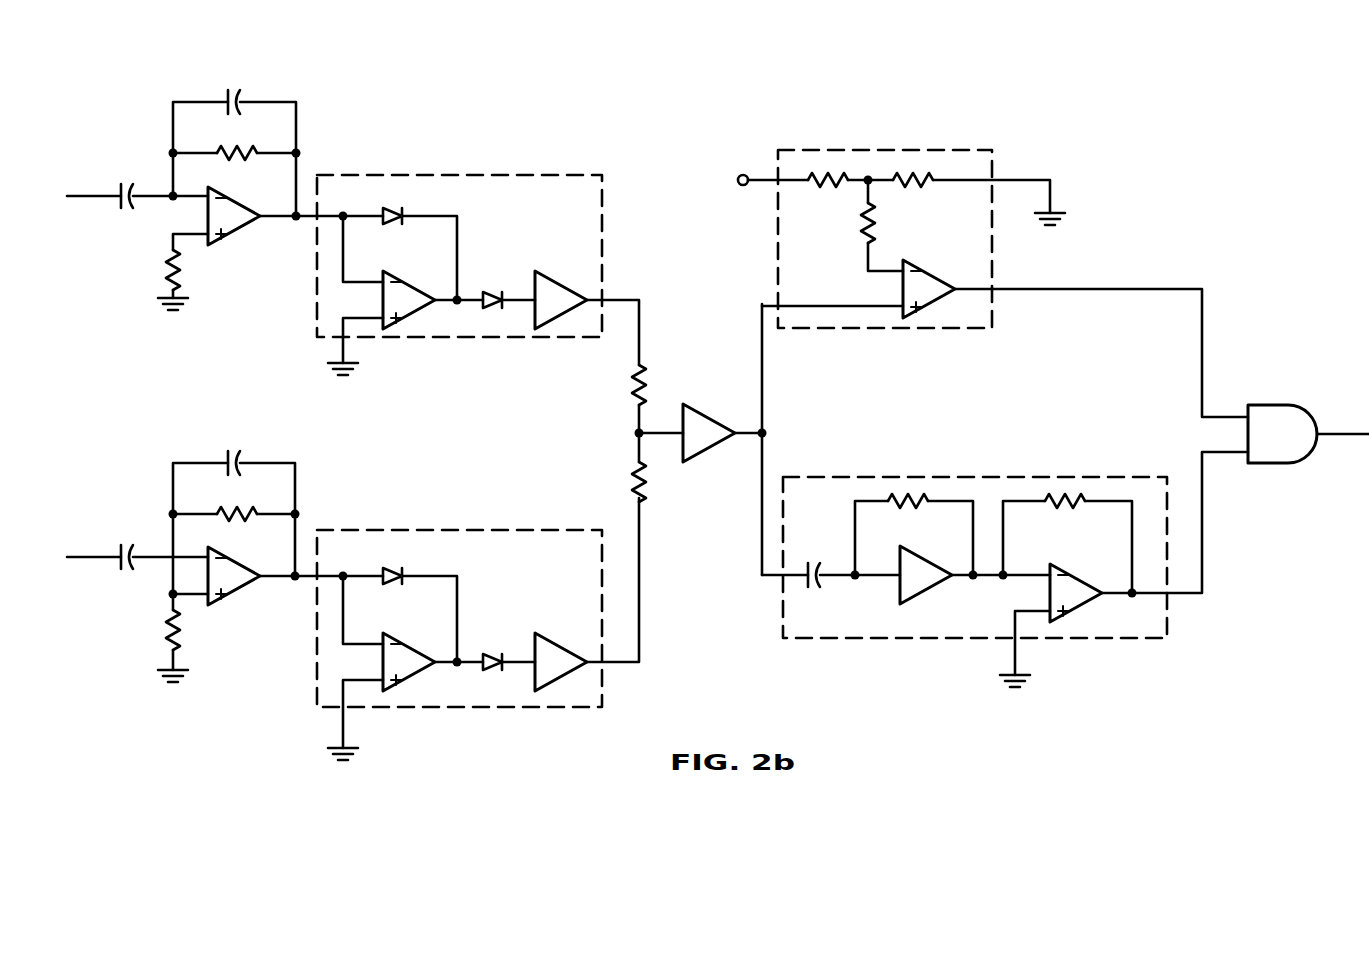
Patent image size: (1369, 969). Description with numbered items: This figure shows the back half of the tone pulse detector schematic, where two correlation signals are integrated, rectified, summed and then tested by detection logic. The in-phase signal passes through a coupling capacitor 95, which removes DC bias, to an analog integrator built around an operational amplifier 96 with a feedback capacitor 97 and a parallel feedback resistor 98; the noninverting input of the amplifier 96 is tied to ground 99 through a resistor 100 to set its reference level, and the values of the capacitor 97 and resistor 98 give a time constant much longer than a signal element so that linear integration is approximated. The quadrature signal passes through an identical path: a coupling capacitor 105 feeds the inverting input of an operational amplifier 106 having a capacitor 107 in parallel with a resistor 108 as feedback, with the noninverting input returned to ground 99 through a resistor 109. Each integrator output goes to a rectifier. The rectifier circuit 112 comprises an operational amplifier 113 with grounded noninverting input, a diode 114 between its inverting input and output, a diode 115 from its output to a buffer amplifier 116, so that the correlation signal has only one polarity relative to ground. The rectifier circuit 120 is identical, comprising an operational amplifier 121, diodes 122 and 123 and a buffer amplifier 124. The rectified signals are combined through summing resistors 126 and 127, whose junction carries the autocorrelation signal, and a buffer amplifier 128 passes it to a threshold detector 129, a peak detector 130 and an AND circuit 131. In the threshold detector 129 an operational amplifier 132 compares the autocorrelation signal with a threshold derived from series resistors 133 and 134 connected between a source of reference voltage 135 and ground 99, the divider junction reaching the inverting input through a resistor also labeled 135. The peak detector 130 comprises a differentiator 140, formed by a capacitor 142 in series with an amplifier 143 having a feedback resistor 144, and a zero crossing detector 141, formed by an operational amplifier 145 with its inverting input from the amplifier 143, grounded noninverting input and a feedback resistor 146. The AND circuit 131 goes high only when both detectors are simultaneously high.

The coupling capacitor 95 is at (122, 200).
The operational amplifier 96 is at (237, 230).
The feedback capacitor 97 is at (227, 95).
The feedback resistor 98 is at (237, 150).
The ground 99 is at (192, 296).
The resistor 100 is at (170, 270).
The coupling capacitor 105 is at (118, 553).
The operational amplifier 106 is at (237, 590).
The capacitor 107 is at (230, 457).
The resistor 108 is at (236, 510).
The resistor 109 is at (170, 621).
The rectifier circuit 112 is at (434, 173).
The operational amplifier 113 is at (422, 307).
The diode 114 is at (395, 203).
The diode 115 is at (496, 290).
The buffer amplifier 116 is at (557, 272).
The rectifier circuit 120 is at (449, 530).
The operational amplifier 121 is at (420, 670).
The diode 122 is at (394, 565).
The diode 123 is at (494, 652).
The buffer amplifier 124 is at (557, 633).
The resistor 126 is at (633, 373).
The resistor 127 is at (634, 482).
The buffer amplifier 128 is at (706, 412).
The threshold detector 129 is at (880, 150).
The peak detector 130 is at (978, 477).
The AND circuit 131 is at (1278, 404).
The operational amplifier 132 is at (921, 273).
The resistor 133 is at (828, 192).
The resistor 134 is at (914, 190).
The source of reference voltage 135 is at (749, 176).
The differentiator 140 is at (922, 608).
The zero crossing detector 141 is at (1080, 620).
The capacitor 142 is at (825, 566).
The amplifier 143 is at (898, 592).
The feedback resistor 144 is at (905, 496).
The operational amplifier 145 is at (1086, 578).
The feedback resistor 146 is at (1062, 496).